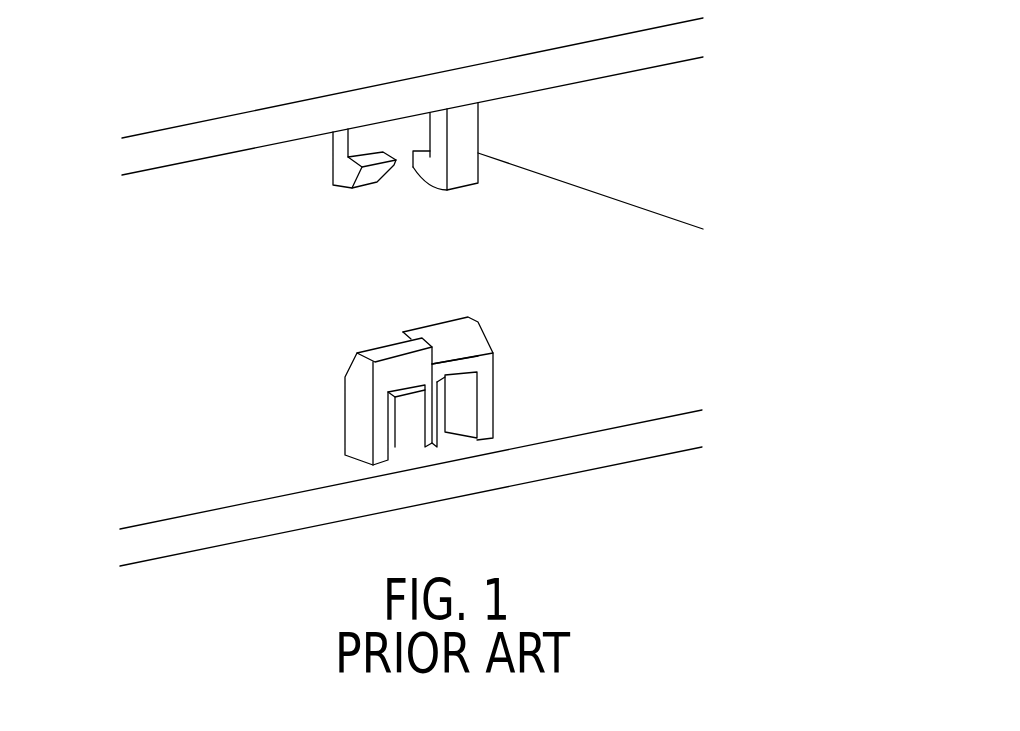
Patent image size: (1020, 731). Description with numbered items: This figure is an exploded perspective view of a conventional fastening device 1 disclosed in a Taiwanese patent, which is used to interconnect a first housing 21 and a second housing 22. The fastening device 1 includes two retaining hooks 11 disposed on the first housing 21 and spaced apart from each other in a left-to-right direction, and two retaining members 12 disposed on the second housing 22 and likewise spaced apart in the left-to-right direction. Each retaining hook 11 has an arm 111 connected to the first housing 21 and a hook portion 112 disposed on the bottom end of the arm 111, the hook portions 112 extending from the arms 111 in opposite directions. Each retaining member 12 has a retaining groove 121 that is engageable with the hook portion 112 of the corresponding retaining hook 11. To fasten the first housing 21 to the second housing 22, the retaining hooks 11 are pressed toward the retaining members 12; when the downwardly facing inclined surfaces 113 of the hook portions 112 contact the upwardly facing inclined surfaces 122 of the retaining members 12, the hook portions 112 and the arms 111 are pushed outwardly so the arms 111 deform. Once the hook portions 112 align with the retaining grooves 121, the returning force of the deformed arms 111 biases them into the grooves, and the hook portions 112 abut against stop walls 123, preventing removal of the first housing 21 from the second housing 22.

The fastening device 1 is at (405, 131).
The retaining hook 11 is at (405, 131).
The arm 111 is at (461, 133).
The hook portion 112 is at (415, 150).
The downwardly facing inclined surface 113 is at (420, 175).
The retaining member 12 is at (417, 364).
The retaining groove 121 is at (458, 408).
The upwardly facing inclined surface 122 is at (473, 345).
The stop wall 123 is at (458, 373).
The first housing 21 is at (555, 88).
The second housing 22 is at (555, 478).